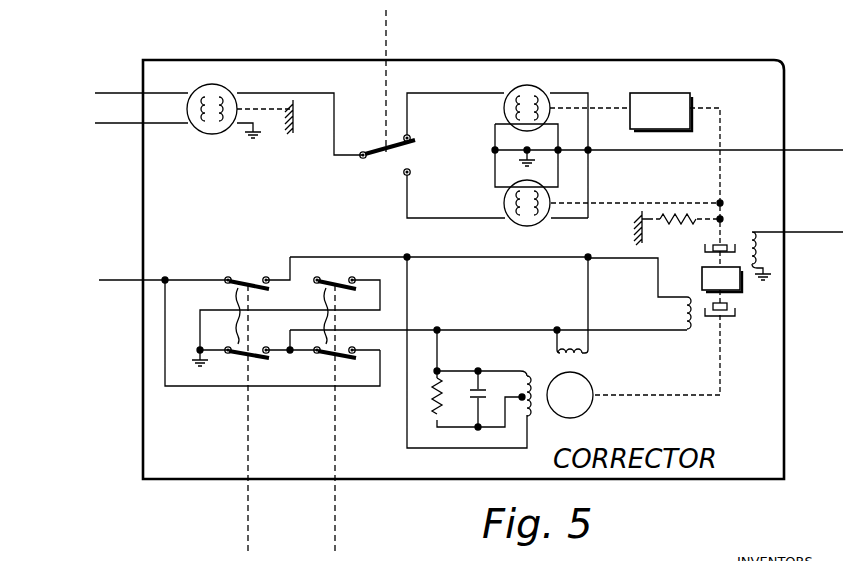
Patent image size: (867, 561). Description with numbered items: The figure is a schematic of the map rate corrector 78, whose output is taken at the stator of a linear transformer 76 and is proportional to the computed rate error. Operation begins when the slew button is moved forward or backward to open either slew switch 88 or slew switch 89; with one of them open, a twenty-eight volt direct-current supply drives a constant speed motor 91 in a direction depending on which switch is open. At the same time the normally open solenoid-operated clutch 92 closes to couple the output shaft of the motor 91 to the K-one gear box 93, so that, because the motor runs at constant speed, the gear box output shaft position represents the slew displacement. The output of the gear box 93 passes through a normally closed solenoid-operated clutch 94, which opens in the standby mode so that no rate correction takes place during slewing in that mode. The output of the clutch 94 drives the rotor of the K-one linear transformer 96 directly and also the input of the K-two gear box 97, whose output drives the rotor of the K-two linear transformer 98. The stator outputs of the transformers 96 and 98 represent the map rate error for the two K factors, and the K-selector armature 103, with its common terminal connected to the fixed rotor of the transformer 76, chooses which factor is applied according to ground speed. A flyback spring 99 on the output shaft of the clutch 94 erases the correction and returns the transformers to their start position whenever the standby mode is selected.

The map rate corrector 78 is at (182, 60).
The linear transformer 76 is at (213, 87).
The K-selector armature 103 is at (378, 160).
The K2 linear transformer 98 is at (537, 88).
The K2 gear box 97 is at (670, 120).
The K1 linear transformer 96 is at (541, 224).
The normally closed solenoid-operated clutch 94 is at (739, 234).
The flyback spring 99 is at (692, 226).
The K1 gear box 93 is at (731, 288).
The normally open solenoid-operated clutch 92 is at (735, 324).
The constant speed motor 91 is at (604, 417).
The slew switch 88 is at (236, 330).
The slew switch 89 is at (321, 304).